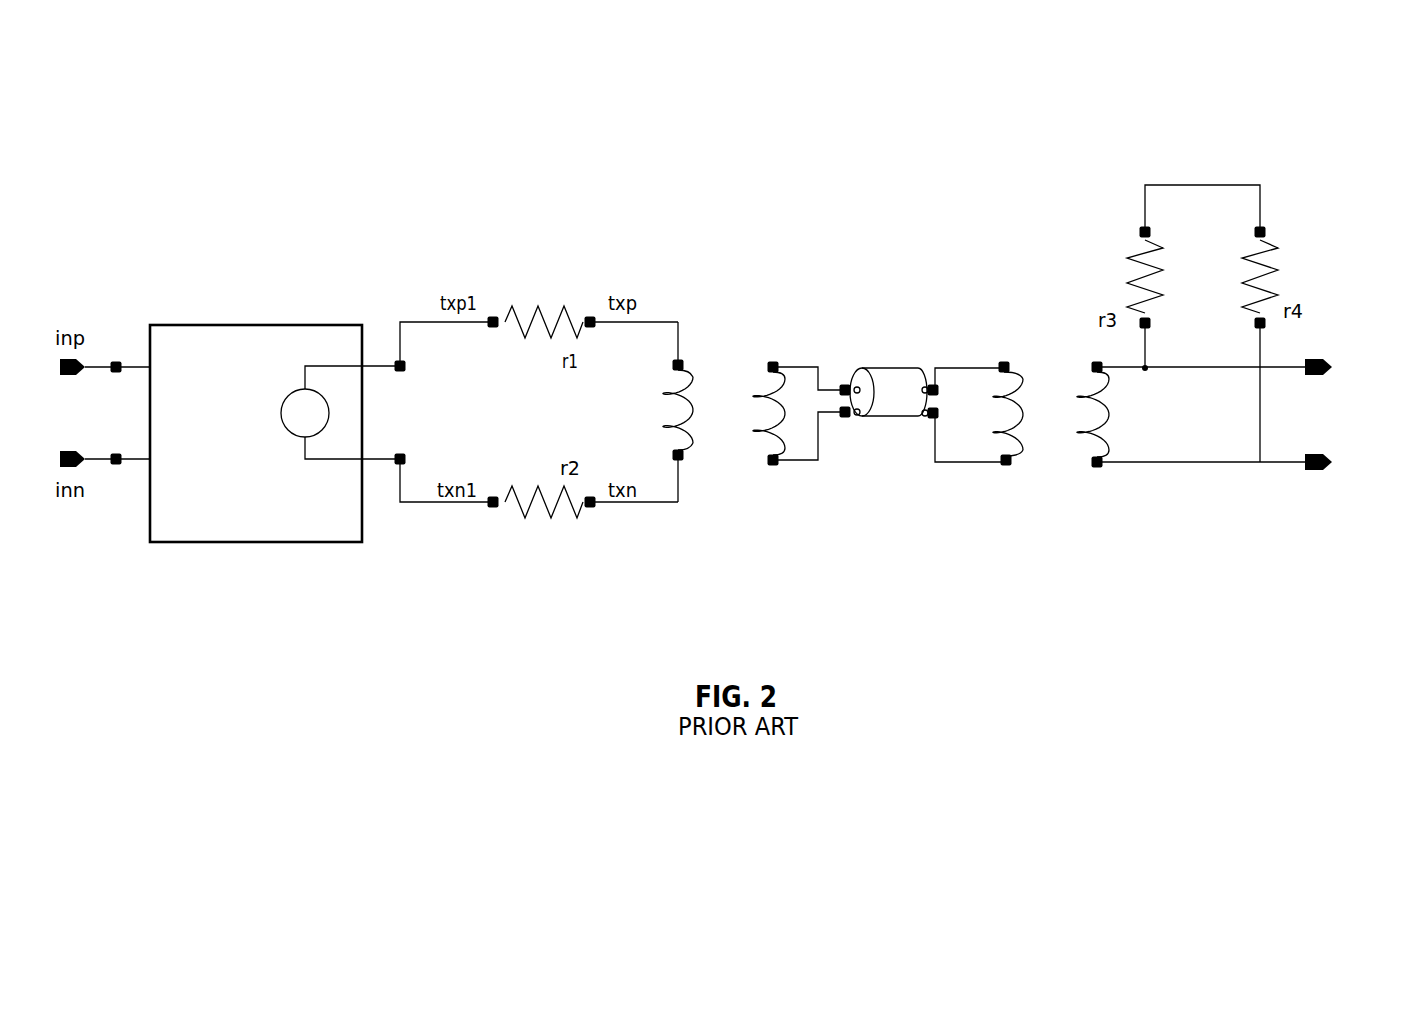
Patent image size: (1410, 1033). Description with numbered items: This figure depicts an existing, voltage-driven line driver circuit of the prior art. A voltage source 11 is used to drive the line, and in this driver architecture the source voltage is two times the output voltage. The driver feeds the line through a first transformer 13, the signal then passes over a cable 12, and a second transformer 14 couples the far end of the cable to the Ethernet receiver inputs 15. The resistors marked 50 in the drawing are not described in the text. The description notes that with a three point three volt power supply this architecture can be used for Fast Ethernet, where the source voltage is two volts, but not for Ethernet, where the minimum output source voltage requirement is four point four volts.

The voltage source 11 is at (267, 347).
The cable 12 is at (885, 423).
The transformer 13 is at (725, 443).
The transformer 14 is at (1048, 450).
The Ethernet receiver inputs 15 is at (1282, 472).
The 50 ohm termination resistor 50 is at (902, 369).